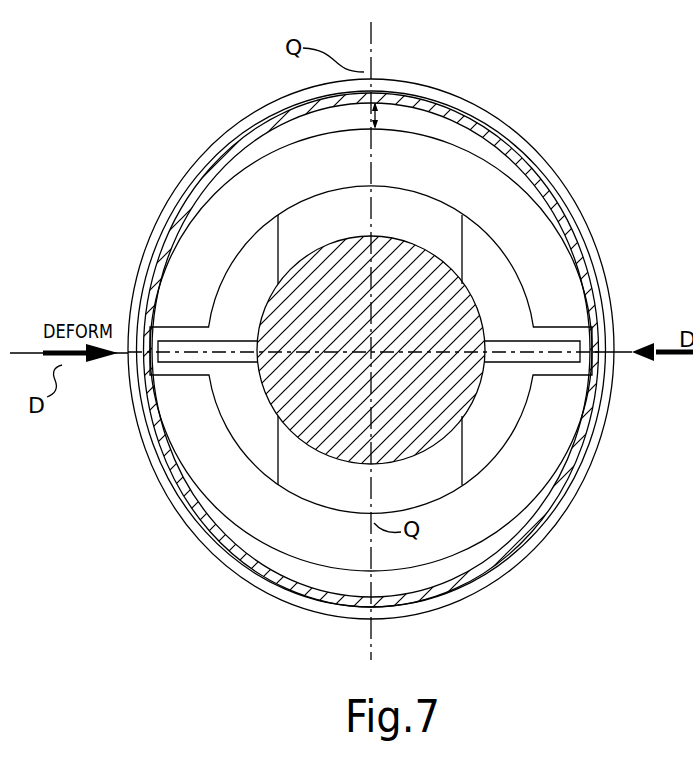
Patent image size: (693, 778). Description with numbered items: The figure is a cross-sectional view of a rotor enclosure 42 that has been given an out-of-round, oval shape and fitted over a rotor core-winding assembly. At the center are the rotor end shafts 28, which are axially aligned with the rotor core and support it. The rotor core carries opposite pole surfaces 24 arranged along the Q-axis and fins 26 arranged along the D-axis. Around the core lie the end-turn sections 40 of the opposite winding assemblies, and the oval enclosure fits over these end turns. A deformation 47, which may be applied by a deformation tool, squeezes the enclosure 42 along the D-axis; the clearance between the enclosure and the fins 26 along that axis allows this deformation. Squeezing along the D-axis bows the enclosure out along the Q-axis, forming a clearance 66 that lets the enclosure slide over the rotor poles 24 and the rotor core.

The pole surfaces 24 is at (363, 218).
The fins 26 is at (175, 363).
The rotor end shafts 28 is at (262, 303).
The end-turn sections 40 is at (285, 160).
The rotor enclosure 42 is at (556, 175).
The deformation 47 is at (90, 362).
The clearance 66 is at (380, 118).